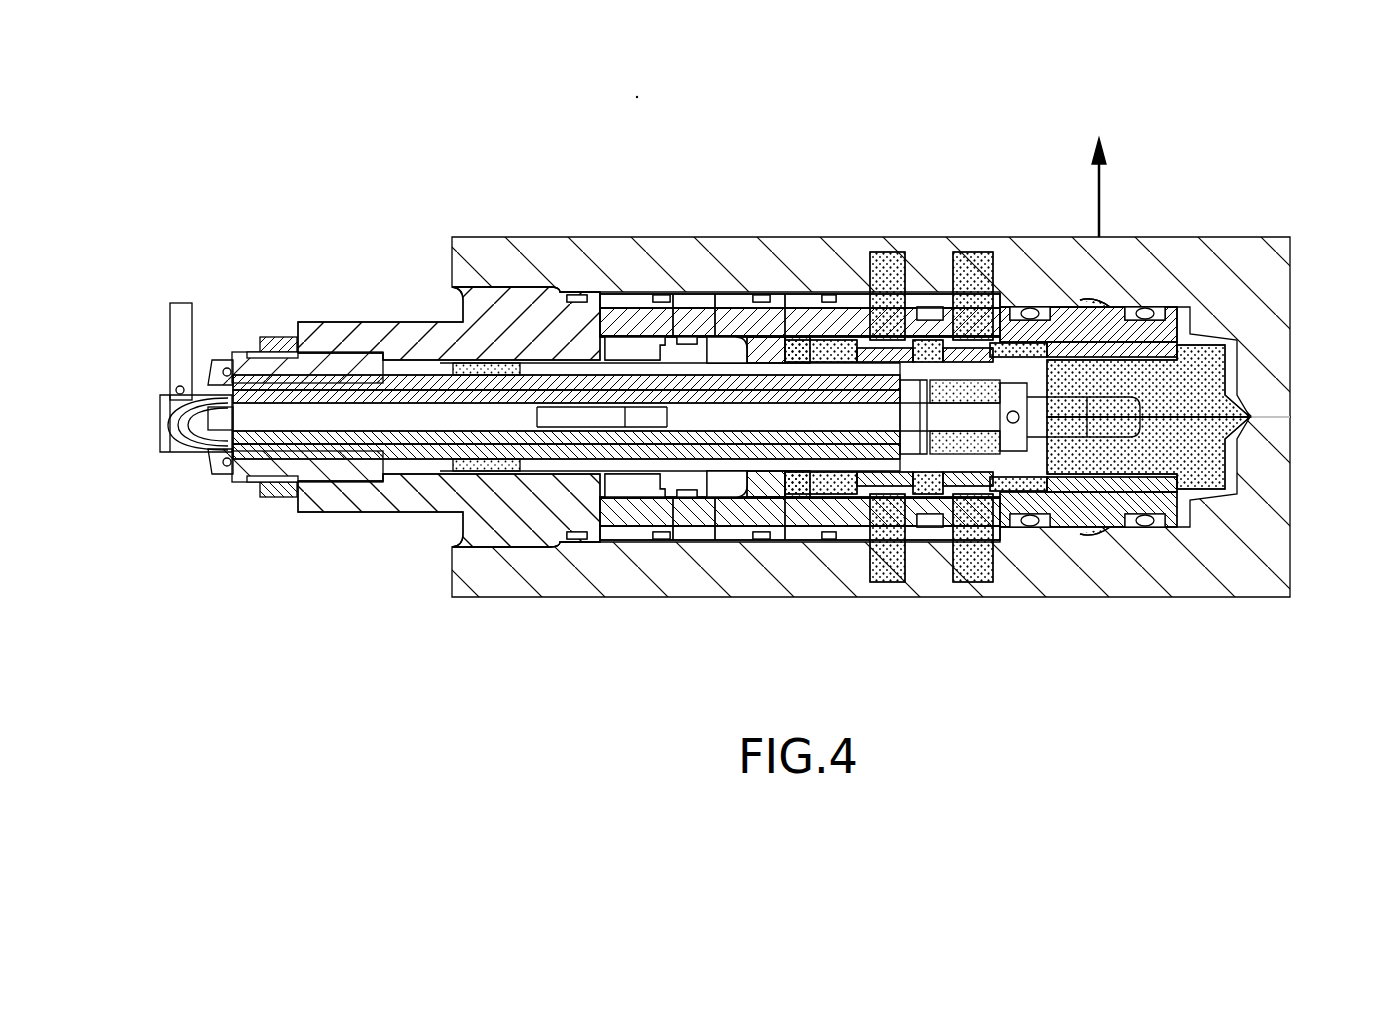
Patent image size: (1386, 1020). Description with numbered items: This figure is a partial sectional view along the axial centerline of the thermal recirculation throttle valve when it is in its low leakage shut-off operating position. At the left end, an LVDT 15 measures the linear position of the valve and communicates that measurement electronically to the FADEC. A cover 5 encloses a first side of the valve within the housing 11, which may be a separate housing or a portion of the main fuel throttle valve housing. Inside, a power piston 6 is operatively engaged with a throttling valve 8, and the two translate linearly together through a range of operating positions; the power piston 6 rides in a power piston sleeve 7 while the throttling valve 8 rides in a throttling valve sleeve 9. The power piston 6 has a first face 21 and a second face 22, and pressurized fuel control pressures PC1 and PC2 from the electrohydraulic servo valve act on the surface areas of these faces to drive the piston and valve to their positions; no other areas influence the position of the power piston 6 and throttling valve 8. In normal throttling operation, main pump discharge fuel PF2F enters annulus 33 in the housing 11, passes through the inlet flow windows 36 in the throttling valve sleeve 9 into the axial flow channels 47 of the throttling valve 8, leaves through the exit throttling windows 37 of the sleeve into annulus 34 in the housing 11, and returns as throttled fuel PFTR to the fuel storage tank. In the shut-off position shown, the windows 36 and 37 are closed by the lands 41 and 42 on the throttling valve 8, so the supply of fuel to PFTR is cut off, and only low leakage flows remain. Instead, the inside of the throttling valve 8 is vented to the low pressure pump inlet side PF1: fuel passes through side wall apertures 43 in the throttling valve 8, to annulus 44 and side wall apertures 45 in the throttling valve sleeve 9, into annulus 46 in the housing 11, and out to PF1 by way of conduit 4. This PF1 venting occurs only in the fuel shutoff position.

The conduit 4 is at (1148, 161).
The cover 5 is at (432, 333).
The power piston 6 is at (685, 358).
The power piston sleeve 7 is at (535, 300).
The throttling valve 8 is at (1175, 488).
The throttling valve sleeve 9 is at (1175, 515).
The housing 11 is at (1280, 526).
The LVDT 15 is at (160, 428).
The first face 21 is at (640, 345).
The second face 22 is at (718, 360).
The annulus 33 is at (972, 330).
The annulus 34 is at (870, 350).
The inlet flow windows 36 is at (945, 330).
The exit throttling windows 37 is at (888, 330).
The land 41 is at (1043, 335).
The land 42 is at (800, 340).
The side wall apertures 43 is at (1105, 380).
The annulus 44 is at (1110, 352).
The side wall apertures 45 is at (1190, 330).
The annulus 46 is at (1103, 303).
The axial flow channels 47 is at (796, 350).
The control pressure PC1 is at (714, 548).
The control pressure PC2 is at (630, 552).
The throttled fuel PFTR is at (890, 585).
The main pump discharge fuel PF2F is at (968, 585).
The low pressure pump inlet fuel PF1 is at (1105, 537).